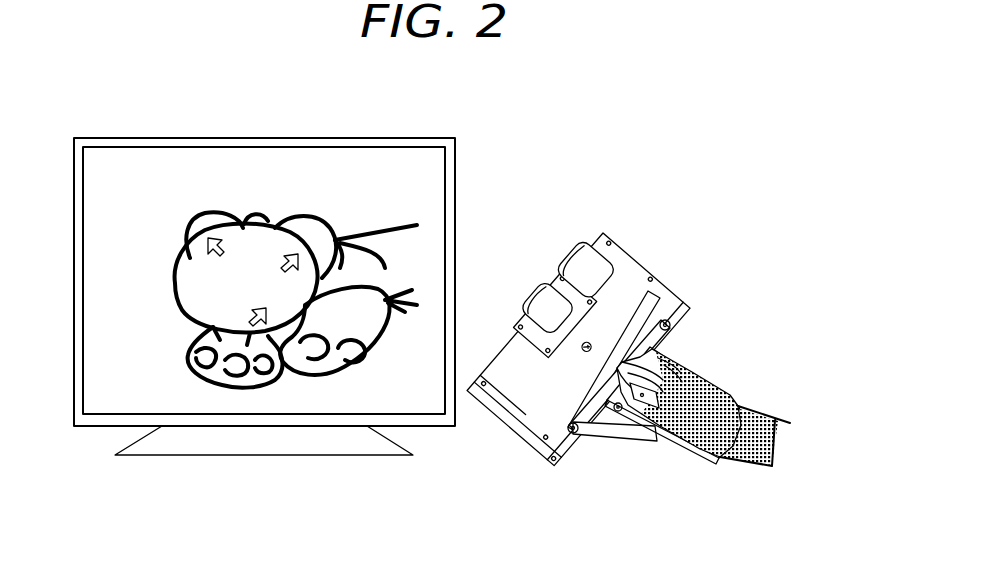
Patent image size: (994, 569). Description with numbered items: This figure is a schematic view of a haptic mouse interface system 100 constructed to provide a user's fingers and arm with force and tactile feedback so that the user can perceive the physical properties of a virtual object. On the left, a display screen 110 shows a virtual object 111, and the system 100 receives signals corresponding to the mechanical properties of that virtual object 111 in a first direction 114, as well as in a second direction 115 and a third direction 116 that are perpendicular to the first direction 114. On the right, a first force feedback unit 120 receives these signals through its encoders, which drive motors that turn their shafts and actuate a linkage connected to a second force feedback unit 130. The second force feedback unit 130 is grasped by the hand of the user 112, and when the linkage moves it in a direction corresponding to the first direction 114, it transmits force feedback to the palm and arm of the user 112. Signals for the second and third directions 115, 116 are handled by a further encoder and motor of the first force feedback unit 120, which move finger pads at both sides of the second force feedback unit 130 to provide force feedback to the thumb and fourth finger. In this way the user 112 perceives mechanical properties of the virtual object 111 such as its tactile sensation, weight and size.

The haptic mouse interface system 100 is at (623, 362).
The display screen 110 is at (436, 127).
The virtual object 111 is at (250, 245).
The user 112 is at (707, 384).
The first direction 114 is at (293, 260).
The second direction 115 is at (211, 242).
The third direction 116 is at (263, 322).
The first force feedback unit 120 is at (623, 262).
The second force feedback unit 130 is at (660, 442).